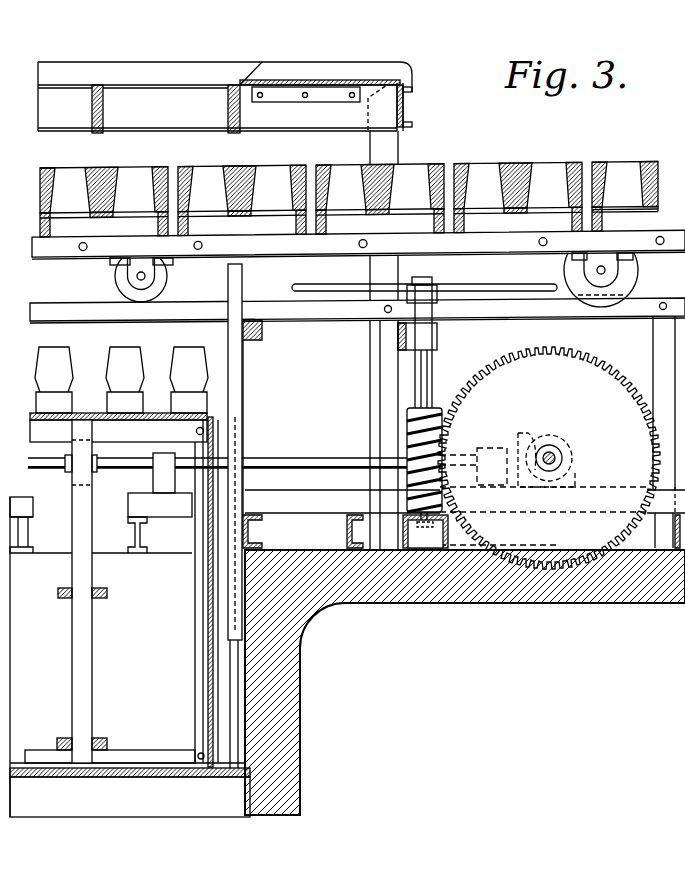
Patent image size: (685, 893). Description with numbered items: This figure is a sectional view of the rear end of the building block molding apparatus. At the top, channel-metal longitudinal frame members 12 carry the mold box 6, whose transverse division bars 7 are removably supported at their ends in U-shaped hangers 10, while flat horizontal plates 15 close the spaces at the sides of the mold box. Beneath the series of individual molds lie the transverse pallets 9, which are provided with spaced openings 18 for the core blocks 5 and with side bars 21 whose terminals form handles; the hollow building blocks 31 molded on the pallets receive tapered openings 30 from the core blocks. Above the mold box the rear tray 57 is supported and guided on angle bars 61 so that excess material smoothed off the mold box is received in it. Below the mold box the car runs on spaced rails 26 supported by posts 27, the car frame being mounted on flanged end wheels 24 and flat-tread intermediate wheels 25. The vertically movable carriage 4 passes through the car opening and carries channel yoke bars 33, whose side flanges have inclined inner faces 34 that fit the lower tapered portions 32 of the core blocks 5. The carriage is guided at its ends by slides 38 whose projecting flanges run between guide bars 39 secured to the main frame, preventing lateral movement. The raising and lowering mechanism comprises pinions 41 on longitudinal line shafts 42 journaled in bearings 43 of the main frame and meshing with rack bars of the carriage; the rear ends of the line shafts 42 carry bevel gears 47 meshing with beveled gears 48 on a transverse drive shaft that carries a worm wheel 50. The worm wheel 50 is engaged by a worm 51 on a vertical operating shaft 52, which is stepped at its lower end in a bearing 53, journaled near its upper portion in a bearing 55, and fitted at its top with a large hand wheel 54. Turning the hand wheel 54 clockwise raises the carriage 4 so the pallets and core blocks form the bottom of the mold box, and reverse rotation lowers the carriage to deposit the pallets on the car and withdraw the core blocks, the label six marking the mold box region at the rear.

The vertically movable carriage 4 is at (189, 615).
The core blocks 5 is at (107, 370).
The mold box 6 is at (164, 591).
The division bars 7 is at (104, 109).
The pallets 9 is at (658, 212).
The hangers 10 is at (98, 134).
The longitudinal frame members 12 is at (147, 72).
The horizontal plates 15 is at (70, 85).
The openings 18 is at (618, 210).
The longitudinal bars 21 is at (606, 229).
The end wheels 24 is at (632, 279).
The intermediate wheels 25 is at (120, 282).
The rails 26 is at (323, 308).
The posts 27 is at (388, 380).
The tapered openings 30 is at (625, 182).
The hollow building blocks 31 is at (603, 165).
The lower tapered portions 32 is at (180, 405).
The channel yoke bars 33 is at (36, 410).
The inclined inner faces 34 is at (112, 405).
The slides 38 is at (224, 676).
The guide bars 39 is at (232, 597).
The pinions 41 is at (80, 492).
The line shafts 42 is at (297, 457).
The bearings 43 is at (160, 476).
The bevel gears 47 is at (518, 433).
The beveled gears 48 is at (568, 446).
The worm wheel 50 is at (607, 370).
The worm 51 is at (407, 420).
The operating shaft 52 is at (436, 381).
The bearing 53 is at (433, 550).
The hand wheel 54 is at (497, 284).
The bearing 55 is at (440, 333).
The tray 57 is at (318, 82).
The angle bars 61 is at (295, 102).